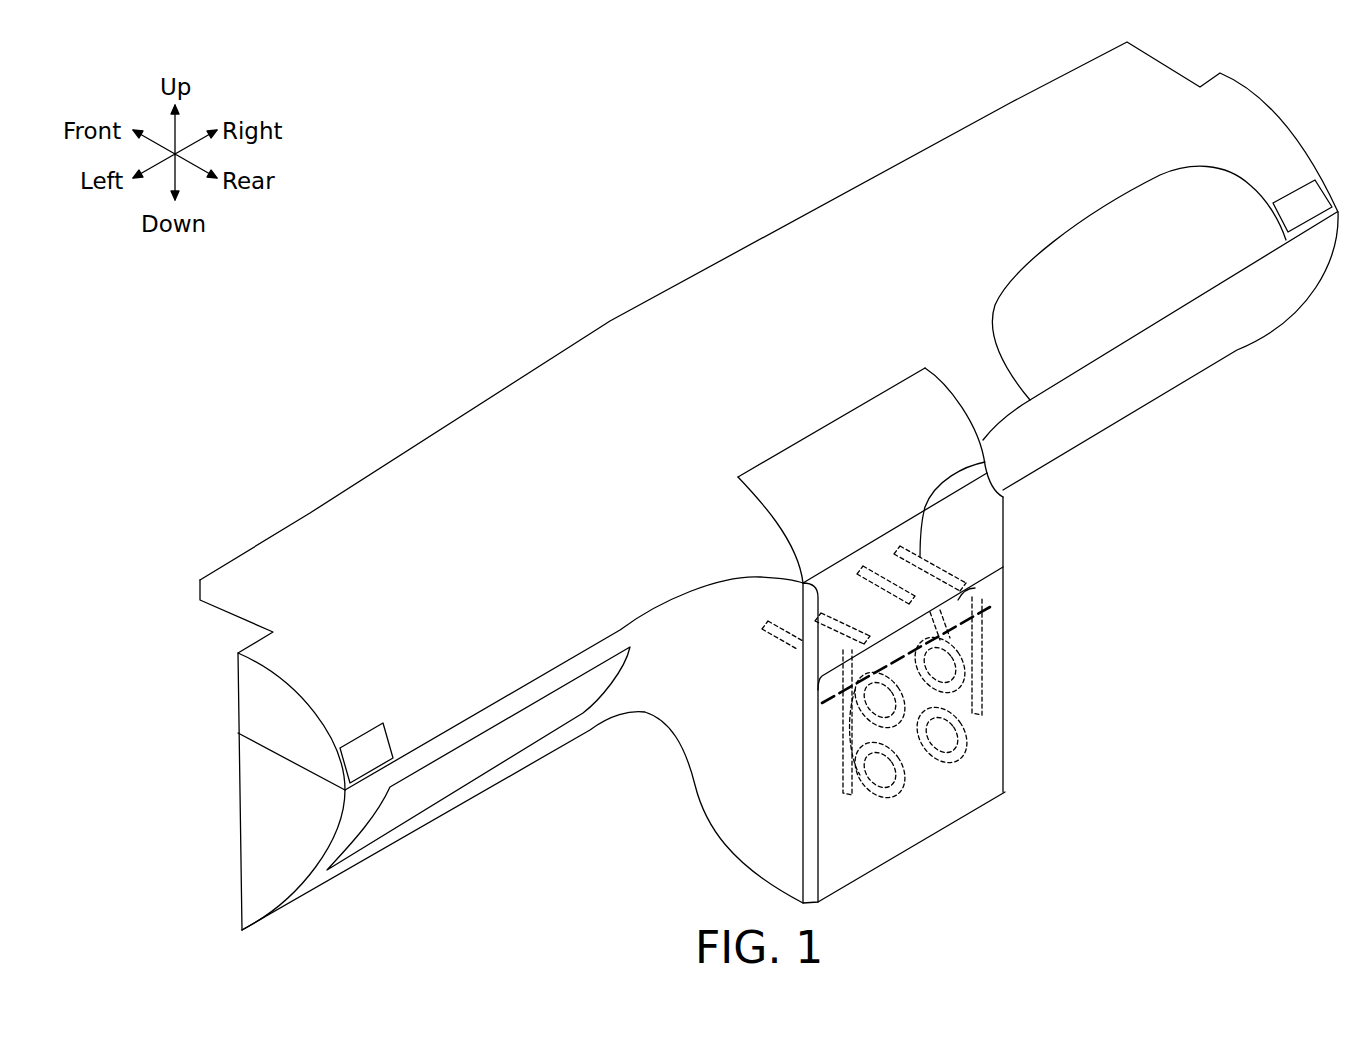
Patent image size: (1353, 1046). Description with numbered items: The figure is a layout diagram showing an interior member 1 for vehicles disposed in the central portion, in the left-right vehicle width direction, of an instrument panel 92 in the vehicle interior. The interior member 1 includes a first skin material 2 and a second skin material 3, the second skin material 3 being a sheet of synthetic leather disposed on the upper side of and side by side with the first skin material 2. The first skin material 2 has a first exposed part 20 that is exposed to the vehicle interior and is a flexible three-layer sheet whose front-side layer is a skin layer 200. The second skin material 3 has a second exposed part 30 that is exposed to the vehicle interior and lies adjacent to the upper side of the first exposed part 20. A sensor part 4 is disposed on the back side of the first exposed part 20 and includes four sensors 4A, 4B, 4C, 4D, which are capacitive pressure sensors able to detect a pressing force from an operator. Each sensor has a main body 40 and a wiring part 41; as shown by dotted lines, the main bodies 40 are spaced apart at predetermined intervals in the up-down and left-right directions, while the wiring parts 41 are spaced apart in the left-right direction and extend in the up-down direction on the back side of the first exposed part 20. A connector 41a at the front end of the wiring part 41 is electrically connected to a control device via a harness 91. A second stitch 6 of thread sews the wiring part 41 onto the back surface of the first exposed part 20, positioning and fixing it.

The interior member 1 is at (1130, 485).
The first skin material 2 is at (860, 853).
The second skin material 3 is at (973, 505).
The sensor part 4 is at (937, 758).
The sensor 4A is at (870, 720).
The sensor 4B is at (962, 645).
The sensor 4C is at (880, 793).
The sensor 4D is at (962, 733).
The second stitch 6 is at (958, 600).
The first exposed part 20 is at (913, 827).
The second exposed part 30 is at (985, 537).
The main body 40 is at (937, 743).
The wiring part 41 is at (980, 686).
The connector 41a is at (945, 558).
The harness 91 is at (935, 471).
The instrument panel 92 is at (720, 312).
The skin layer 200 is at (953, 793).